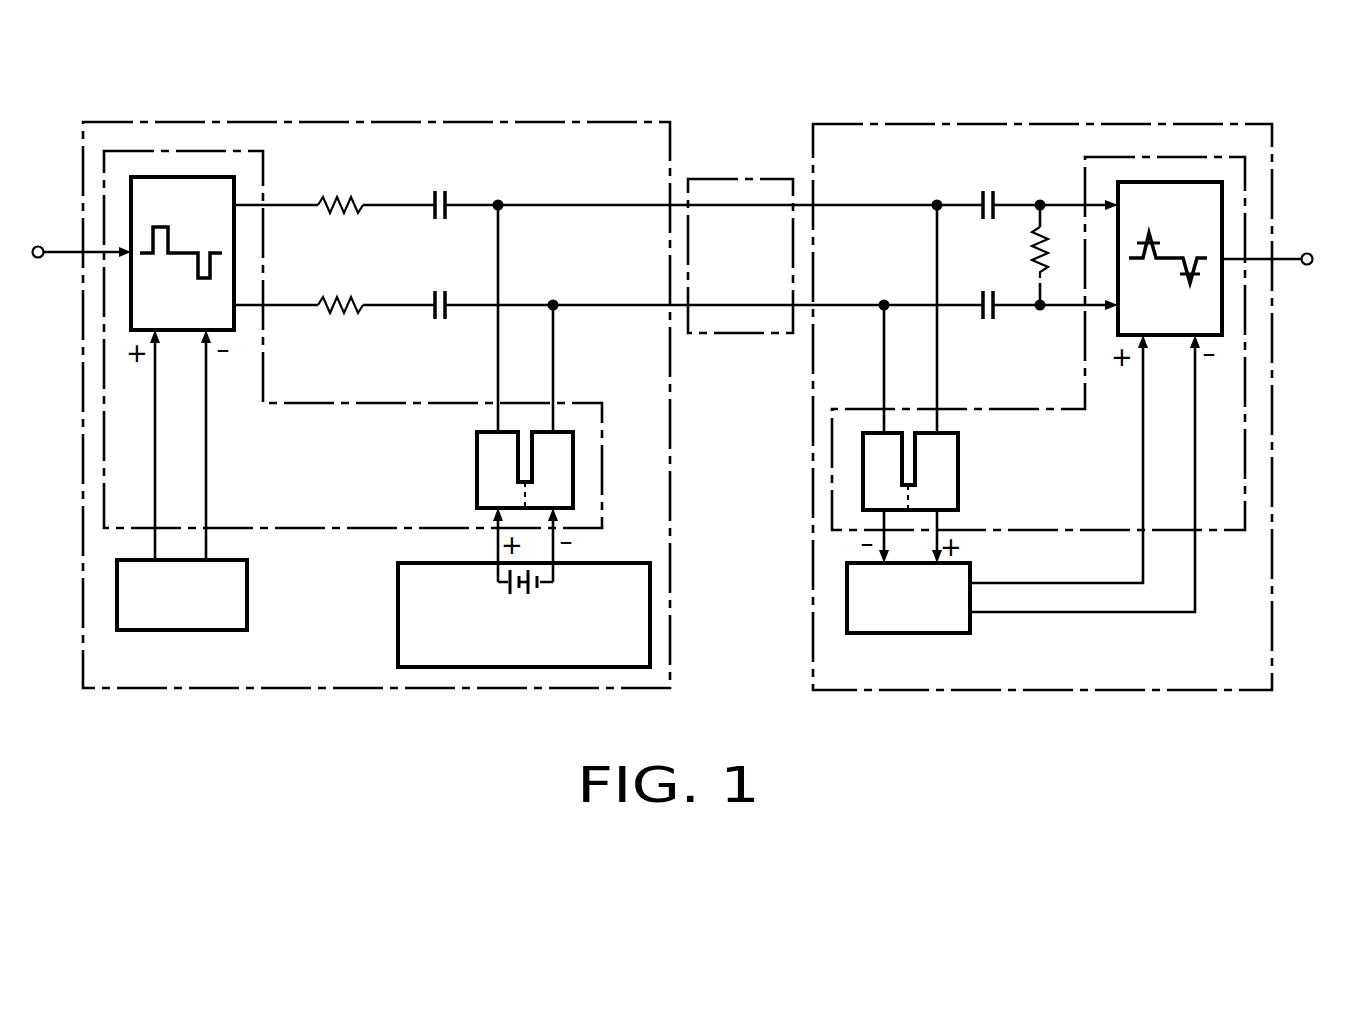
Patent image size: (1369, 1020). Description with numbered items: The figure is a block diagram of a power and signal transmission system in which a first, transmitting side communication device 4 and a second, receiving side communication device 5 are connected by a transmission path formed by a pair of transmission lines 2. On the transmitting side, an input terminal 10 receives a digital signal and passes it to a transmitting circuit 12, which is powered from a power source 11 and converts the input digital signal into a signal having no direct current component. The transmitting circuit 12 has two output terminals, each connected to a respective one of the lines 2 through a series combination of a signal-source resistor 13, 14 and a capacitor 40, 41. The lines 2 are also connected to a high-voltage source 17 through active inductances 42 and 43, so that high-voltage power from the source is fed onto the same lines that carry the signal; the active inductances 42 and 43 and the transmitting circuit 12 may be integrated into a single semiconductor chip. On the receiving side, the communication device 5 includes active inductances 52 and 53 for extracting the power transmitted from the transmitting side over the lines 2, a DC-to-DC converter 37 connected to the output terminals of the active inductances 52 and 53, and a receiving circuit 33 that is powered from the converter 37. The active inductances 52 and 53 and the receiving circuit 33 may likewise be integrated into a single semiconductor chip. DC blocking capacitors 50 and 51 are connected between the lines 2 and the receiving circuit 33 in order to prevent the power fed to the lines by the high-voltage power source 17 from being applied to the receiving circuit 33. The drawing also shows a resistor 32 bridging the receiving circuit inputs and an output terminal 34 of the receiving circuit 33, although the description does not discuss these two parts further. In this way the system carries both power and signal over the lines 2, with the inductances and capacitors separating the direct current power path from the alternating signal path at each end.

The transmission lines 2 is at (739, 179).
The first communication device 4 is at (562, 123).
The second communication device 5 is at (927, 124).
The input terminal 10 is at (39, 259).
The power source 11 is at (250, 587).
The transmitting circuit 12 is at (234, 180).
The signal-source resistor 13 is at (357, 215).
The signal-source resistor 14 is at (357, 315).
The high-voltage source 17 is at (398, 598).
The resistor 32 is at (1031, 262).
The receiving circuit 33 is at (1172, 338).
The output terminal 34 is at (1307, 266).
The DC-to-DC converter 37 is at (908, 634).
The capacitor 40 is at (448, 220).
The capacitor 41 is at (448, 320).
The active inductance 42 is at (477, 443).
The active inductance 43 is at (573, 443).
The DC blocking capacitor 50 is at (993, 191).
The DC blocking capacitor 51 is at (993, 321).
The active inductance 52 is at (958, 446).
The active inductance 53 is at (868, 433).